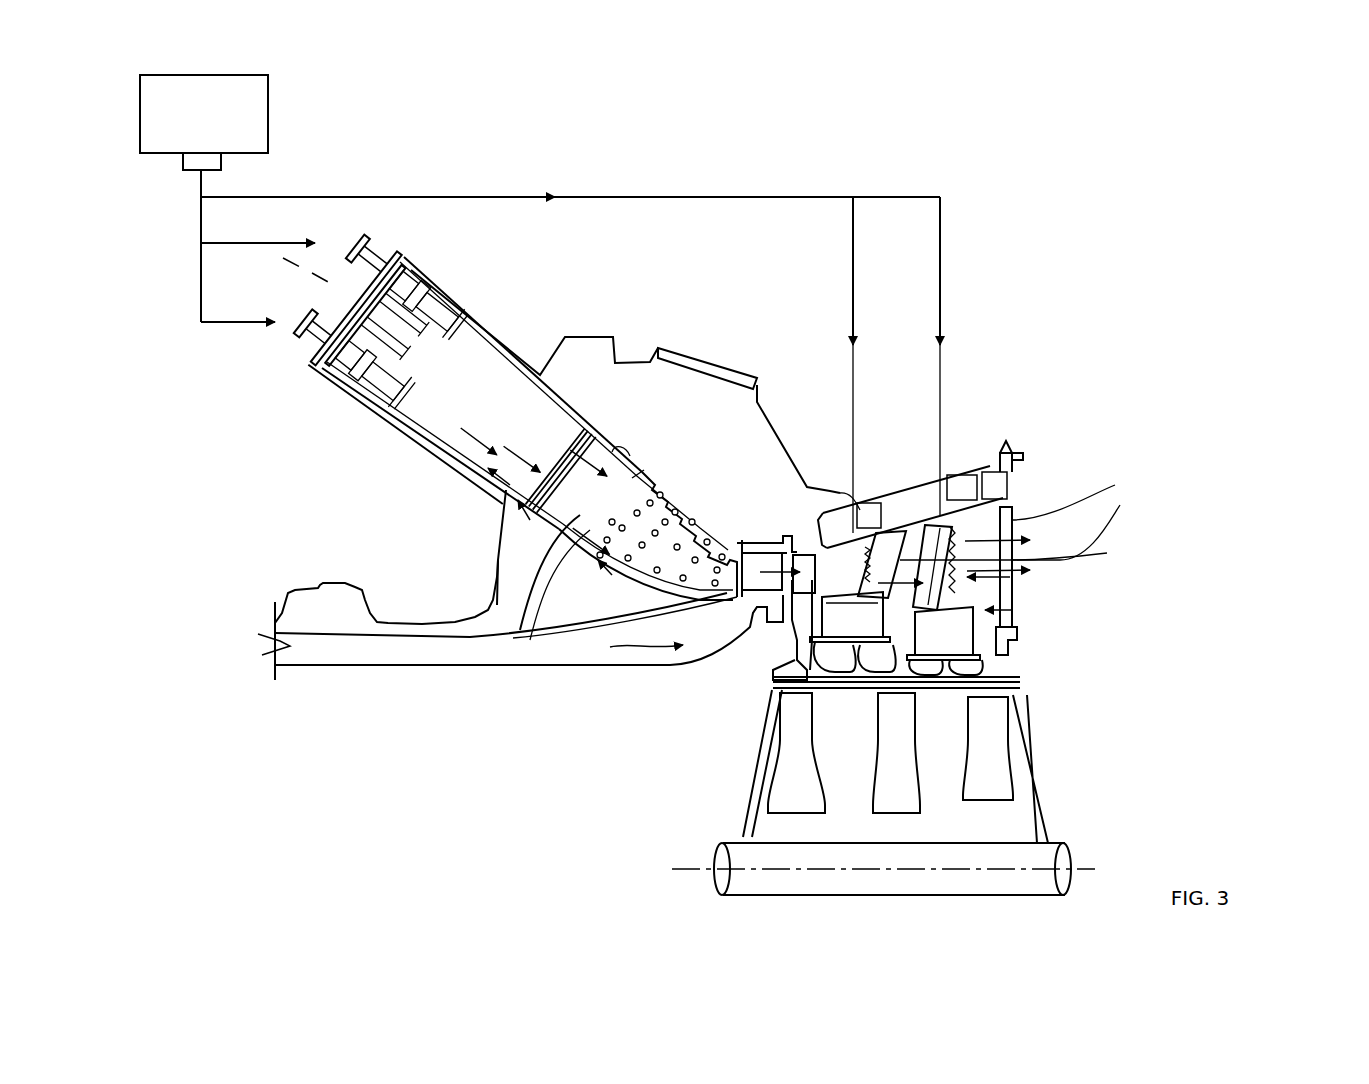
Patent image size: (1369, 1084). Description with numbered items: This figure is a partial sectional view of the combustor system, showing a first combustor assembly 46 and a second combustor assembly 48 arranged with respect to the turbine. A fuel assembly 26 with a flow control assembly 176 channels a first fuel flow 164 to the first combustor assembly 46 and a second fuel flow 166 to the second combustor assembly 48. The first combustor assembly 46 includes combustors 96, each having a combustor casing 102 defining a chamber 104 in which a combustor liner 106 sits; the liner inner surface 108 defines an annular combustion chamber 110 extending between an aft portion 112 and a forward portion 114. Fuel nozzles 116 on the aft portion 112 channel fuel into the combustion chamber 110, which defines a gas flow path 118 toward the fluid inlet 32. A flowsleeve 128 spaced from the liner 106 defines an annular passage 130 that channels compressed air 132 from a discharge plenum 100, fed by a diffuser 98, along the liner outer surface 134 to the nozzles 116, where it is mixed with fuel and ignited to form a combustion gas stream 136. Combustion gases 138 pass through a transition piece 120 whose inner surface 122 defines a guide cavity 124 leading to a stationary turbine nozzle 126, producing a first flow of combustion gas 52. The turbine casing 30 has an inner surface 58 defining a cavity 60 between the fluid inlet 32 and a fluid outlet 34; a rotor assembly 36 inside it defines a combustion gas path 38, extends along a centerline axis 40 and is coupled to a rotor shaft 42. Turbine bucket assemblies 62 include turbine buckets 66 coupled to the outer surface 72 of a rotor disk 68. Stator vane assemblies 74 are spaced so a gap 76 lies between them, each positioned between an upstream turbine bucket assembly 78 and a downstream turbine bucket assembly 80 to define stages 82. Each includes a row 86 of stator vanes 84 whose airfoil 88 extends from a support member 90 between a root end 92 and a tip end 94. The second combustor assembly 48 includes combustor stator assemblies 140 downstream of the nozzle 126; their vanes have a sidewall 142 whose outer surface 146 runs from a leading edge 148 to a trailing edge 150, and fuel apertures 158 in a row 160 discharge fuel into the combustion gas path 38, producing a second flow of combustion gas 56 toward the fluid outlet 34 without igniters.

The fuel assembly 26 is at (268, 112).
The flow control assembly 176 is at (221, 160).
The second fuel flow 166 is at (397, 197).
The first fuel flow 164 is at (273, 243).
The fuel nozzles 116 is at (425, 330).
The inner surface 108 is at (519, 375).
The combustor liner 106 is at (558, 392).
The aft portion 112 is at (433, 432).
The gas flow path 118 is at (458, 462).
The outer surface 134 is at (498, 355).
The combustor casing 102 is at (755, 375).
The combustion chamber 110 is at (480, 428).
The guide cavity 124 is at (612, 497).
The forward portion 114 is at (585, 431).
The discharge plenum 100 is at (737, 466).
The chamber 104 is at (692, 404).
The inner surface 122 is at (640, 470).
The transition piece 120 is at (708, 513).
The stationary turbine nozzle 126 is at (752, 550).
The compressed air 132 is at (485, 490).
The combustion gas stream 136 is at (507, 485).
The annular passage 130 is at (537, 510).
The flowsleeve 128 is at (557, 550).
The combustion gases 138 is at (553, 597).
The diffuser 98 is at (710, 637).
The fluid inlet 32 is at (785, 595).
The turbine buckets 66 is at (800, 603).
The outer surface 72 is at (810, 615).
The rotor disk 68 is at (806, 660).
The first flow of combustion gas 52 is at (598, 470).
The stator vanes 84 is at (822, 536).
The support member 90 is at (916, 501).
The downstream turbine bucket assembly 80 is at (995, 485).
The casing 30 is at (1025, 455).
The stages 82 is at (862, 485).
The combustor stator assemblies 140 is at (848, 520).
The upstream turbine bucket assembly 78 is at (887, 548).
The airfoil 88 is at (1118, 503).
The outer surface 146 is at (945, 600).
The trailing edge 150 is at (965, 575).
The gap 76 is at (1000, 598).
The row 160 is at (1100, 553).
The inner surface 58 is at (1018, 505).
The root end 92 is at (1079, 494).
The second flow of combustion gas 56 is at (1015, 545).
The fuel apertures 158 is at (1012, 545).
The combustion gas path 38 is at (1020, 575).
The cavity 60 is at (1080, 588).
The tip end 94 is at (985, 617).
The rotor assembly 36 is at (1045, 645).
The fluid outlet 34 is at (1035, 483).
The second combustor assembly 48 is at (915, 435).
The row 86 is at (866, 437).
The combustors 96 is at (475, 283).
The first combustor assembly 46 is at (500, 300).
The turbine bucket assemblies 62 is at (967, 627).
The stator vane assemblies 74 is at (985, 665).
The leading edge 148 is at (878, 630).
The sidewall 142 is at (960, 690).
The centerline axis 40 is at (1088, 865).
The rotor shaft 42 is at (740, 900).